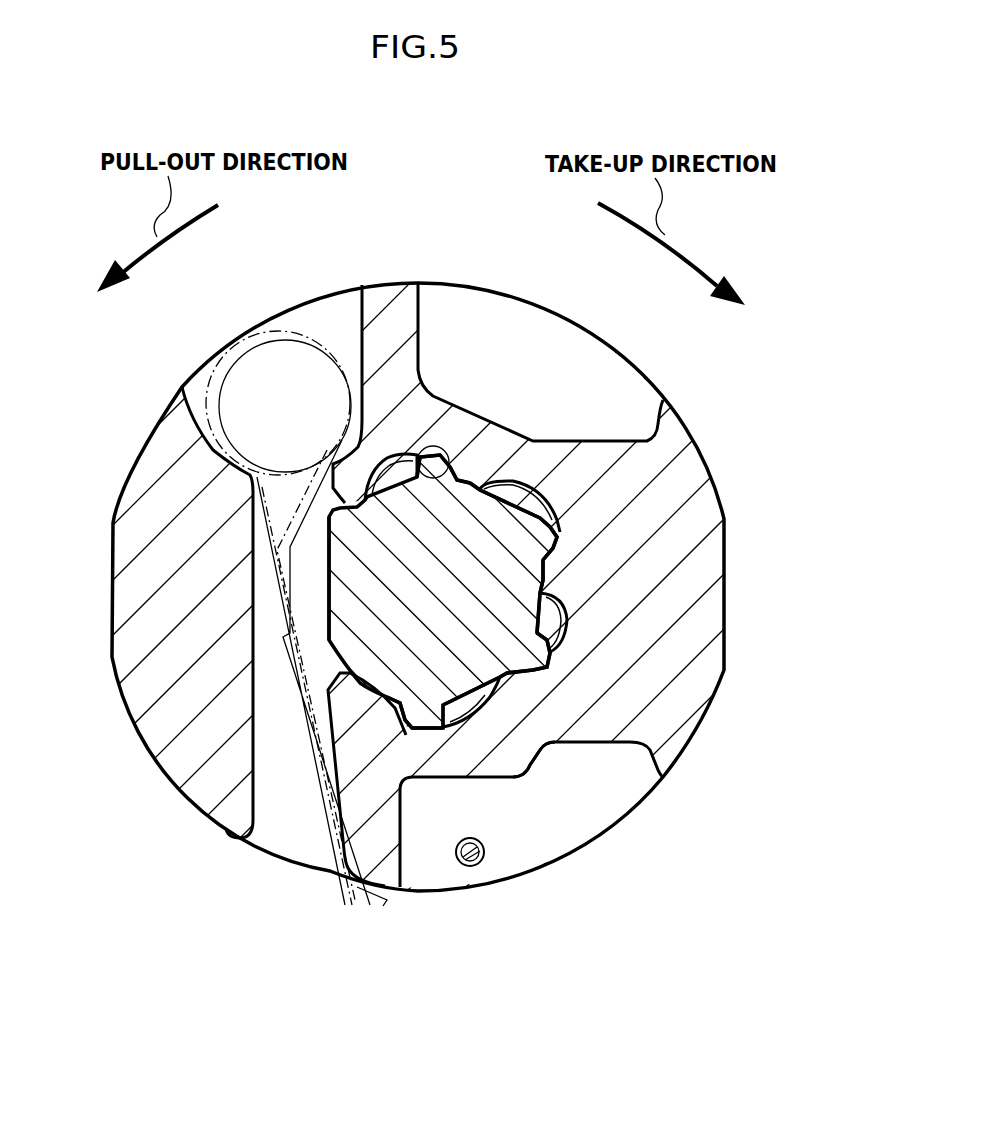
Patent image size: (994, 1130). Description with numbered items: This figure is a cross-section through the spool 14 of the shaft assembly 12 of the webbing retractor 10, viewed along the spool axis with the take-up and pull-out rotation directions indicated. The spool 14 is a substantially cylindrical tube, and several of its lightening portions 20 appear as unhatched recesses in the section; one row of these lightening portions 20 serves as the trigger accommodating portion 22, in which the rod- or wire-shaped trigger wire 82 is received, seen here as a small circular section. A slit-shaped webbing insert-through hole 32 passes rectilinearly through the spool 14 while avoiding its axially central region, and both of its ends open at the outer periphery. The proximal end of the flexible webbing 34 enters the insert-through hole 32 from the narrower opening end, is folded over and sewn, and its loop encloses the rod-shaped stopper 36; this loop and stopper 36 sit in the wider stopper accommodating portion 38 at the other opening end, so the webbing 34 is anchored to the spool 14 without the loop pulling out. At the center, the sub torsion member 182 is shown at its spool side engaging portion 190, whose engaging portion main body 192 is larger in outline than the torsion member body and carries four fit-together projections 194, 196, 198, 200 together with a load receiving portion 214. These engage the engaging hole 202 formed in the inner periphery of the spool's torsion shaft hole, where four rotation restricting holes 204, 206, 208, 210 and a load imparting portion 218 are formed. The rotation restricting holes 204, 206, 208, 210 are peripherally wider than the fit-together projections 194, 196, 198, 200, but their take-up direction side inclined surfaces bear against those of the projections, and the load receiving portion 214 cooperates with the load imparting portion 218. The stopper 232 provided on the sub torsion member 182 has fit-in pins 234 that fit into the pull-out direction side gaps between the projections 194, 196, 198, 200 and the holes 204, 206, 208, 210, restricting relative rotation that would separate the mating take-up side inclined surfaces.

The webbing retractor 10 is at (421, 254).
The shaft assembly 12 is at (511, 195).
The spool 14 is at (688, 428).
The lightening portions 20 is at (593, 352).
The trigger accommodating portion 22 is at (624, 797).
The webbing insert-through hole 32 is at (210, 833).
The webbing 34 is at (302, 812).
The stopper 36 is at (210, 368).
The stopper accommodating portion 38 is at (210, 432).
The trigger wire 82 is at (477, 866).
The sub torsion member 182 is at (449, 590).
The spool side engaging portion 190 is at (322, 660).
The engaging portion main body 192 is at (333, 613).
The fit-together projection 194 is at (507, 495).
The fit-together projection 196 is at (543, 515).
The fit-together projection 198 is at (545, 672).
The fit-together projection 200 is at (430, 727).
The engaging hole 202 is at (478, 503).
The rotation restricting hole 204 is at (446, 450).
The rotation restricting hole 206 is at (550, 513).
The rotation restricting hole 208 is at (570, 628).
The rotation restricting hole 210 is at (520, 747).
The load receiving portion 214 is at (338, 530).
The load imparting portion 218 is at (338, 548).
The stopper 232 is at (466, 591).
The fit-in pins 234 is at (392, 465).